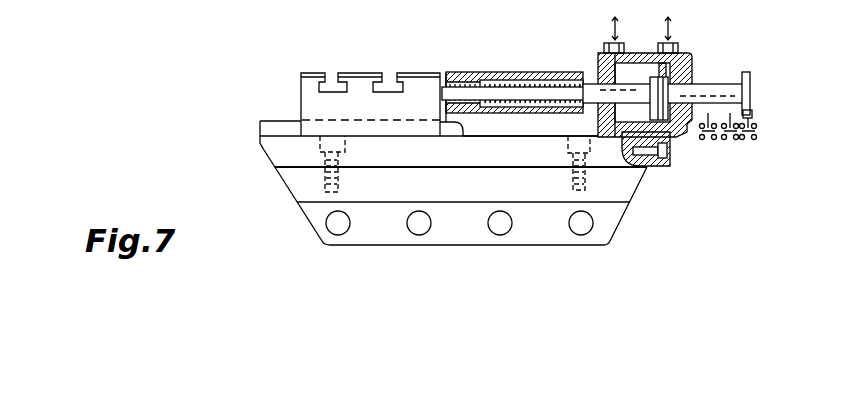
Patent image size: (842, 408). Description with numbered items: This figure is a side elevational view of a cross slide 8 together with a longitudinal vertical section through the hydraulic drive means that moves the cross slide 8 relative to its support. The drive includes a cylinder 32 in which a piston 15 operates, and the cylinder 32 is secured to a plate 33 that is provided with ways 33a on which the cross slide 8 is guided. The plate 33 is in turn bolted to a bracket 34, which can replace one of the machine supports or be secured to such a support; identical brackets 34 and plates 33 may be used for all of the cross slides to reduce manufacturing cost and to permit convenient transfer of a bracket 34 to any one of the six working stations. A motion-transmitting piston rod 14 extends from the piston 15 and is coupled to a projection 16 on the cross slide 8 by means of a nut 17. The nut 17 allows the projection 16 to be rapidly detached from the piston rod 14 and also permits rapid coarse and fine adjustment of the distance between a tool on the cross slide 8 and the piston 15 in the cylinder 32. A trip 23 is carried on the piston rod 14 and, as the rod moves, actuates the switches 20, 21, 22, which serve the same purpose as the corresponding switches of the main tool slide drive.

The cross slide 8 is at (320, 105).
The piston rod 14 is at (593, 90).
The piston 15 is at (688, 53).
The projection 16 is at (465, 73).
The nut 17 is at (512, 82).
The switch 20 is at (710, 142).
The switch 21 is at (728, 142).
The switch 22 is at (748, 142).
The trip 23 is at (750, 82).
The cylinder 32 is at (622, 140).
The plate 33 is at (278, 148).
The ways 33a is at (272, 127).
The bracket 34 is at (300, 185).